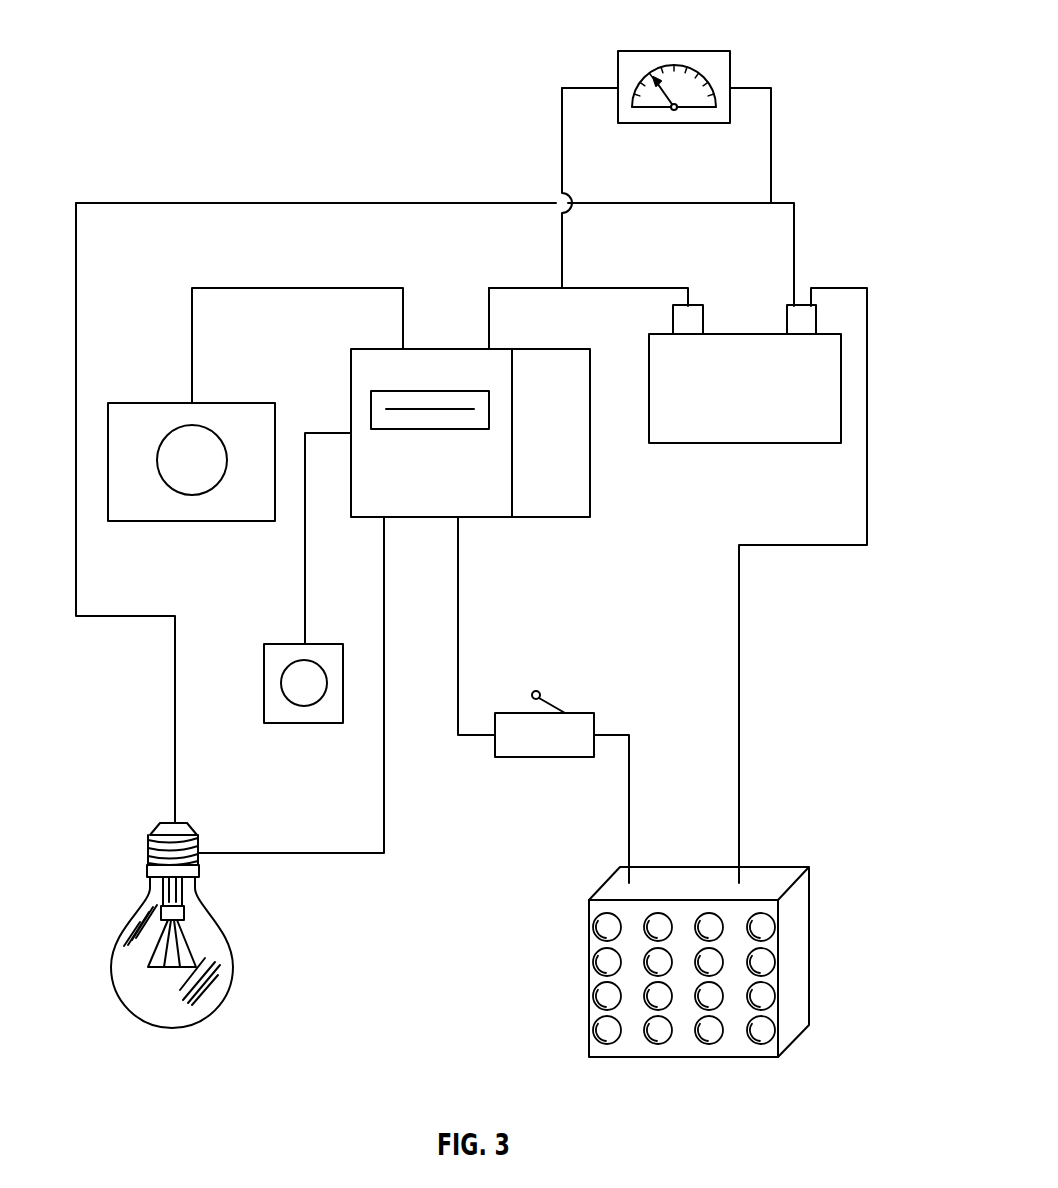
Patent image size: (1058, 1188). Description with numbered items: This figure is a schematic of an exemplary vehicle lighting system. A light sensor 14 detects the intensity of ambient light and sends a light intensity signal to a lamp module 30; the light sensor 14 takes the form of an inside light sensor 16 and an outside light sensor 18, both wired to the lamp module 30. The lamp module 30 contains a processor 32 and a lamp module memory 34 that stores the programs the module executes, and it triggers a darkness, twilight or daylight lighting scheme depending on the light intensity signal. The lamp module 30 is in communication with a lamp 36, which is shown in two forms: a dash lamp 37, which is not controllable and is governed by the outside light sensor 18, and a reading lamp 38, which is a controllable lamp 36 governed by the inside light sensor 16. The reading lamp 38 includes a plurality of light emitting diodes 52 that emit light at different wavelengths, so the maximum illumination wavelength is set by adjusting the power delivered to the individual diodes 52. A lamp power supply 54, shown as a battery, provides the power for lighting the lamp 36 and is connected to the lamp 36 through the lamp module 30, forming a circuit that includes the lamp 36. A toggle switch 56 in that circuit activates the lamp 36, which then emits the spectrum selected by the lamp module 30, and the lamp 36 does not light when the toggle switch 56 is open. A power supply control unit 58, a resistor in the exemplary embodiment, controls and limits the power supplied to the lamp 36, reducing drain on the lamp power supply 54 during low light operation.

The light sensor 14 is at (226, 402).
The inside light sensor 16 is at (168, 432).
The outside light sensor 18 is at (293, 660).
The lamp module 30 is at (502, 348).
The processor 32 is at (577, 486).
The lamp module memory 34 is at (470, 390).
The lamp 36 is at (202, 873).
The dash lamp 37 is at (218, 988).
The reading lamp 38 is at (797, 1043).
The light emitting diodes 52 is at (708, 1040).
The lamp power supply 54 is at (710, 433).
The toggle switch 56 is at (555, 705).
The power supply control unit 58 is at (680, 52).